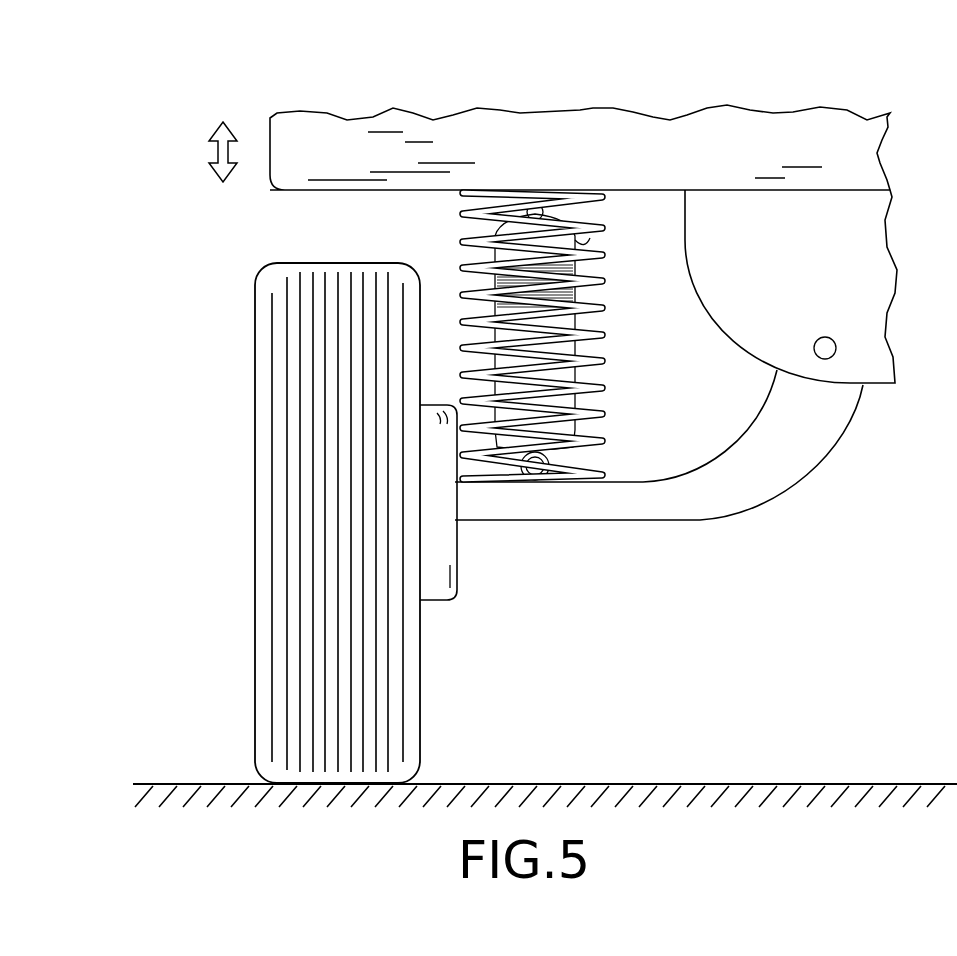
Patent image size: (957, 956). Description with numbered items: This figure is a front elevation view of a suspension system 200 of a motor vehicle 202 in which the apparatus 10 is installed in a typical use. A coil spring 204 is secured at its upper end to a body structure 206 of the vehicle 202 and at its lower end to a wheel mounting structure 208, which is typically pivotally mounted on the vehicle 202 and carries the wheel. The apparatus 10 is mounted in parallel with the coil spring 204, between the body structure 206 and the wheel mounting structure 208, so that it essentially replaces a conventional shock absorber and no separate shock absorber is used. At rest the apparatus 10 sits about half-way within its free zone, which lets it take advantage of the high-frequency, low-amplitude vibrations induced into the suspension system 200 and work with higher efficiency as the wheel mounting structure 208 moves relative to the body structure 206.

The apparatus 10 is at (458, 253).
The suspension system 200 is at (586, 312).
The motor vehicle 202 is at (336, 133).
The coil spring 204 is at (600, 413).
The body structure 206 is at (652, 189).
The wheel mounting structure 208 is at (753, 497).